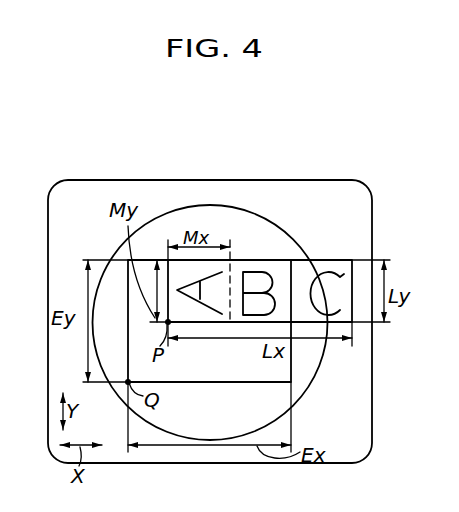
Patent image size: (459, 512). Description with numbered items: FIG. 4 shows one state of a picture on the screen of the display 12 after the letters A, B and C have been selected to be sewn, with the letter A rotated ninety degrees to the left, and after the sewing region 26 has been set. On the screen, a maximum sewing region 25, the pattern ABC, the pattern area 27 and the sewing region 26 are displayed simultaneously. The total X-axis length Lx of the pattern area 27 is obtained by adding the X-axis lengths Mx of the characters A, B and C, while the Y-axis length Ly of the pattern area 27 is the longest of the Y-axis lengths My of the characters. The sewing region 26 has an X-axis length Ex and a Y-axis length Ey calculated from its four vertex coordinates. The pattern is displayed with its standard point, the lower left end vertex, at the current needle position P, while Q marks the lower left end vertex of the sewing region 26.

The display 12 is at (315, 187).
The maximum sewing region 25 is at (113, 259).
The sewing region 26 is at (210, 382).
The pattern area 27 is at (241, 324).